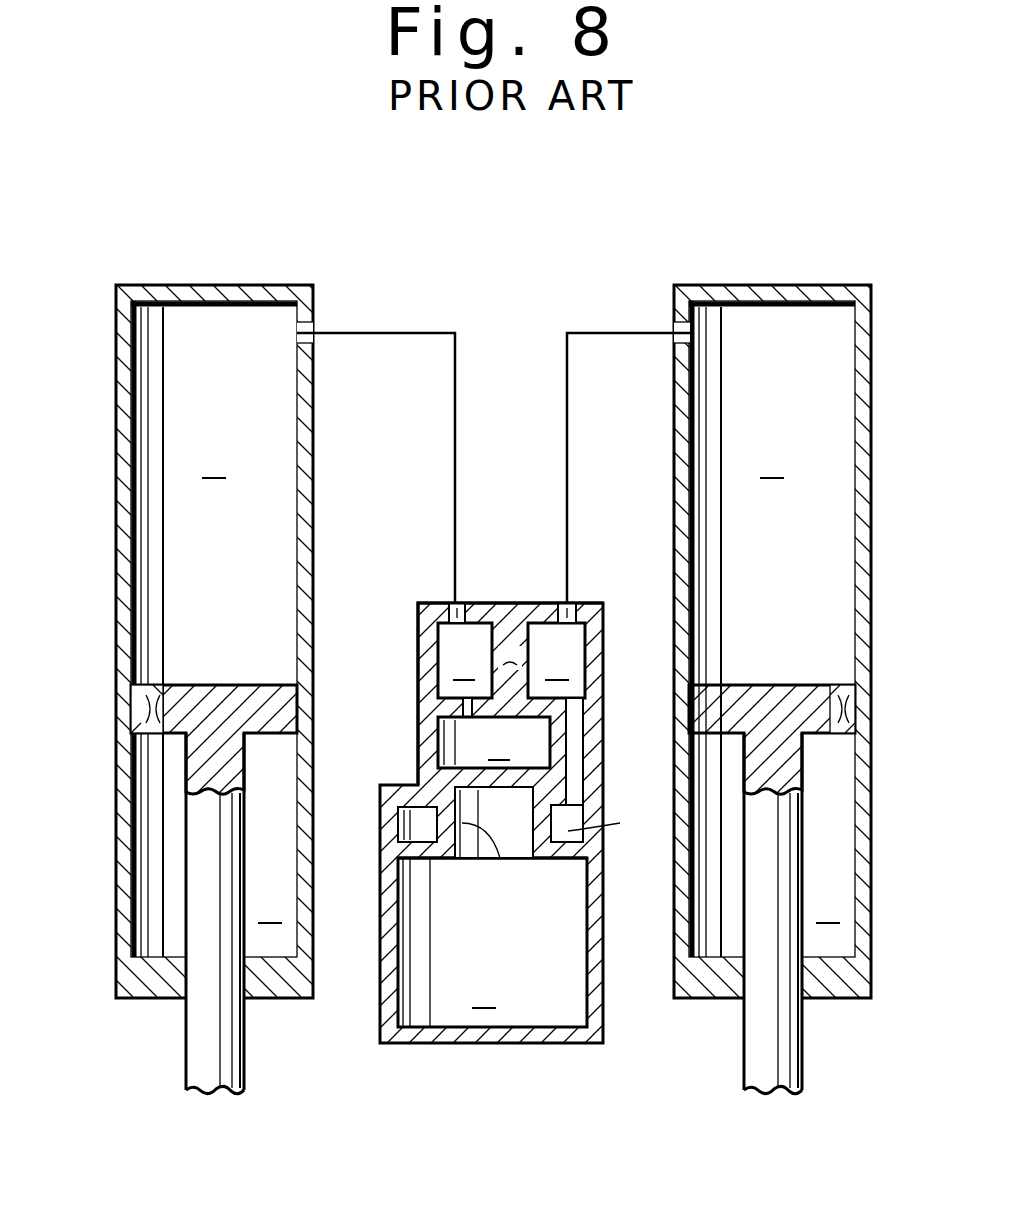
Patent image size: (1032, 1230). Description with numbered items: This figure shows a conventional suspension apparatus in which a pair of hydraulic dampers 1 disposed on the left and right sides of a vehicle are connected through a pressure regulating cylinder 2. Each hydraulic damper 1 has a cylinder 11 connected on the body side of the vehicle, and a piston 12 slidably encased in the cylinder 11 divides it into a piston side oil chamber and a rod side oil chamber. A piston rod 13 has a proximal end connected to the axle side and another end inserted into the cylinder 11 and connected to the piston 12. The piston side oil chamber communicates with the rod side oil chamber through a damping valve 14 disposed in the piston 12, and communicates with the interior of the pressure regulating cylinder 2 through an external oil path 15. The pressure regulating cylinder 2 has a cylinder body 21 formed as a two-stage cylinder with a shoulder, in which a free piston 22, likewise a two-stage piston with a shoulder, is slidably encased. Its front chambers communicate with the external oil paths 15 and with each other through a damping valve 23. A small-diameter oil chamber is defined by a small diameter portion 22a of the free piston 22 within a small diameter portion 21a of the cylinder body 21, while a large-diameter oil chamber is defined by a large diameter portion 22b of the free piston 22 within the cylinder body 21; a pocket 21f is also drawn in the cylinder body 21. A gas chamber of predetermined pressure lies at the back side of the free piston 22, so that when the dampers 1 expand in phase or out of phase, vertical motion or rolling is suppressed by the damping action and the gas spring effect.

The hydraulic damper 1 is at (492, 642).
The pressure regulating cylinder 2 is at (477, 813).
The cylinder 11 is at (117, 592).
The piston 12 is at (252, 703).
The piston rod 13 is at (186, 1058).
The damping valve 14 is at (170, 695).
The oil path 15 is at (386, 333).
The cylinder body 21 is at (477, 815).
The small diameter portion of the cylinder body 21a is at (418, 728).
The pocket 21f is at (382, 826).
The free piston 22 is at (446, 866).
The small diameter portion of the free piston 22a is at (497, 860).
The large diameter portion of the free piston 22b is at (551, 860).
The damping valve 23 is at (511, 652).